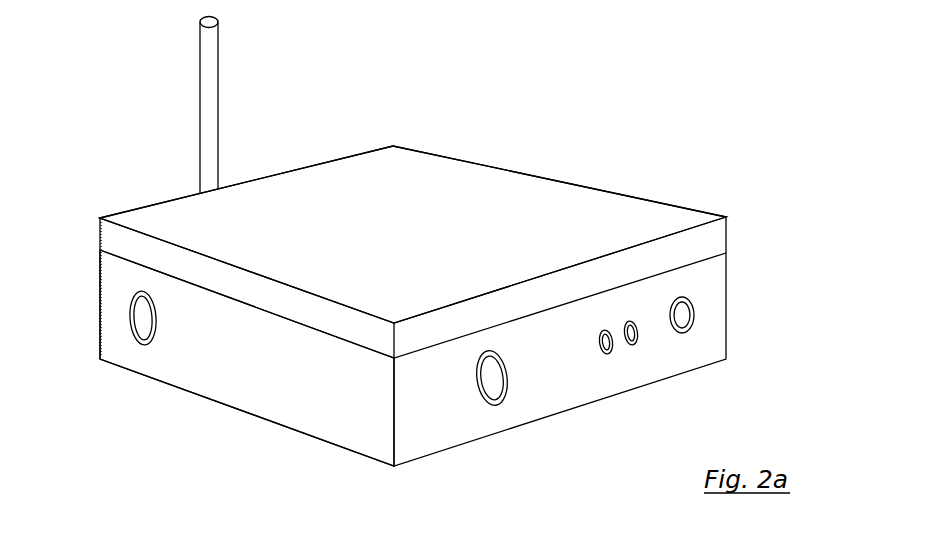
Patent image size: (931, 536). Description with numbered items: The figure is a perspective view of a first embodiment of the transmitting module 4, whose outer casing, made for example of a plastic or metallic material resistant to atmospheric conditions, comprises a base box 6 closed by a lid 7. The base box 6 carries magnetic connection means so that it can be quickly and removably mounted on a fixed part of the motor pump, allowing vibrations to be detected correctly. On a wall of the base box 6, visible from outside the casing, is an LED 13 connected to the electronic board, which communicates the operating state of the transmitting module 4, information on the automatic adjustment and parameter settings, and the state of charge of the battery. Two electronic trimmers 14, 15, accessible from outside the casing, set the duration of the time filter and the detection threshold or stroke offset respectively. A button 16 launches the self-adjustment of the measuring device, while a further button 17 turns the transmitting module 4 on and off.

The transmitting module 4 is at (677, 175).
The base box 6 is at (278, 388).
The lid 7 is at (493, 187).
The LED 13 is at (693, 310).
The trimmer 14 is at (637, 343).
The trimmer 15 is at (604, 355).
The button 16 is at (487, 407).
The button 17 is at (137, 328).